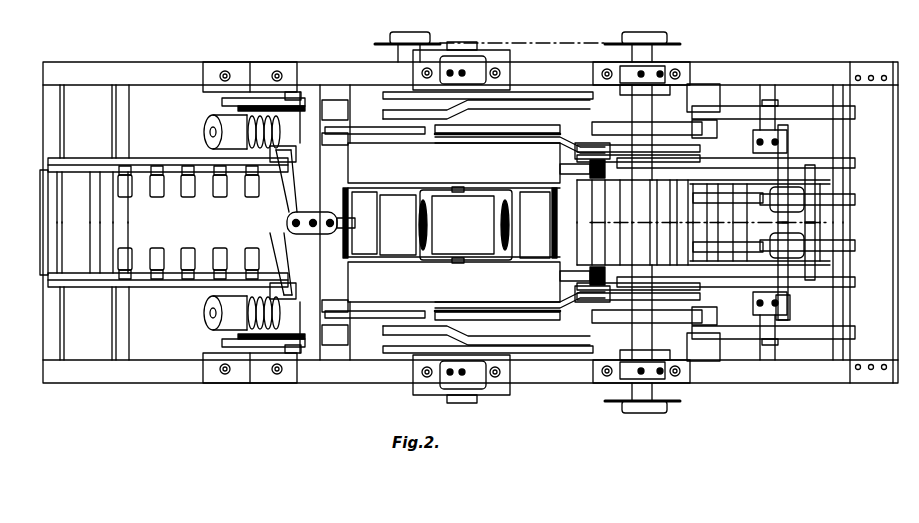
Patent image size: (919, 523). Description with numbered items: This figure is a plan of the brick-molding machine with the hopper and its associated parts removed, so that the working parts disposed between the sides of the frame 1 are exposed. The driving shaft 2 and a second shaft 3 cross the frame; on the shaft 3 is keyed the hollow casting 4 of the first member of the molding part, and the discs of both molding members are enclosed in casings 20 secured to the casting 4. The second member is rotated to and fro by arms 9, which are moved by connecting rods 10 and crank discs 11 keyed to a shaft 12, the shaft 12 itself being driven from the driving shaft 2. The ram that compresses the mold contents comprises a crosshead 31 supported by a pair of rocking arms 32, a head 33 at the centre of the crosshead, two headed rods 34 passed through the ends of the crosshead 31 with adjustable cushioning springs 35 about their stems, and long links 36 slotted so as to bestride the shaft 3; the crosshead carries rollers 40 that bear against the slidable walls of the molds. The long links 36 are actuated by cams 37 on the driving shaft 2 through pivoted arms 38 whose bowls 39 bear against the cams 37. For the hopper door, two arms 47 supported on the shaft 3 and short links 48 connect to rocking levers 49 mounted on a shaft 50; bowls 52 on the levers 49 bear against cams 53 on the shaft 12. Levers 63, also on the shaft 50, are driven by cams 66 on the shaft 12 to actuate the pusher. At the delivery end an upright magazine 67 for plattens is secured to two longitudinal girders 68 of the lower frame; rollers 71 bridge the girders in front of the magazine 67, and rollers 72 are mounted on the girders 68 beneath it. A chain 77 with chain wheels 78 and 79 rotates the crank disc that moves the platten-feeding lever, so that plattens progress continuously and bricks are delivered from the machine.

The frame 1 is at (192, 66).
The driving shaft 2 is at (703, 222).
The second shaft 3 is at (462, 50).
The hollow casting 4 is at (468, 225).
The arms 9 is at (432, 120).
The connecting rods 10 is at (552, 95).
The crank discs 11 is at (818, 120).
The shaft 12 is at (770, 100).
The casings 20 is at (454, 222).
The crosshead 31 is at (283, 206).
The rocking arms 32 is at (222, 103).
The head 33 is at (326, 236).
The headed rods 34 is at (330, 120).
The cushioning springs 35 is at (286, 140).
The long links 36 is at (383, 134).
The cams 37 is at (600, 124).
The pivoted arms 38 is at (575, 148).
The bowls 39 is at (715, 126).
The rollers 40 is at (355, 223).
The arms 47 is at (494, 134).
The short links 48 is at (578, 170).
The rocking levers 49 is at (700, 165).
The shaft 50 is at (785, 320).
The bowls 52 is at (758, 152).
The cams 53 is at (855, 163).
The levers 63 is at (800, 202).
The cams 66 is at (856, 200).
The magazine 67 is at (43, 228).
The longitudinal girders 68 is at (165, 170).
The rollers 71 is at (690, 250).
The rollers 72 is at (158, 190).
The chain 77 is at (522, 33).
The chain wheel 78 is at (668, 48).
The chain wheel 79 is at (392, 46).